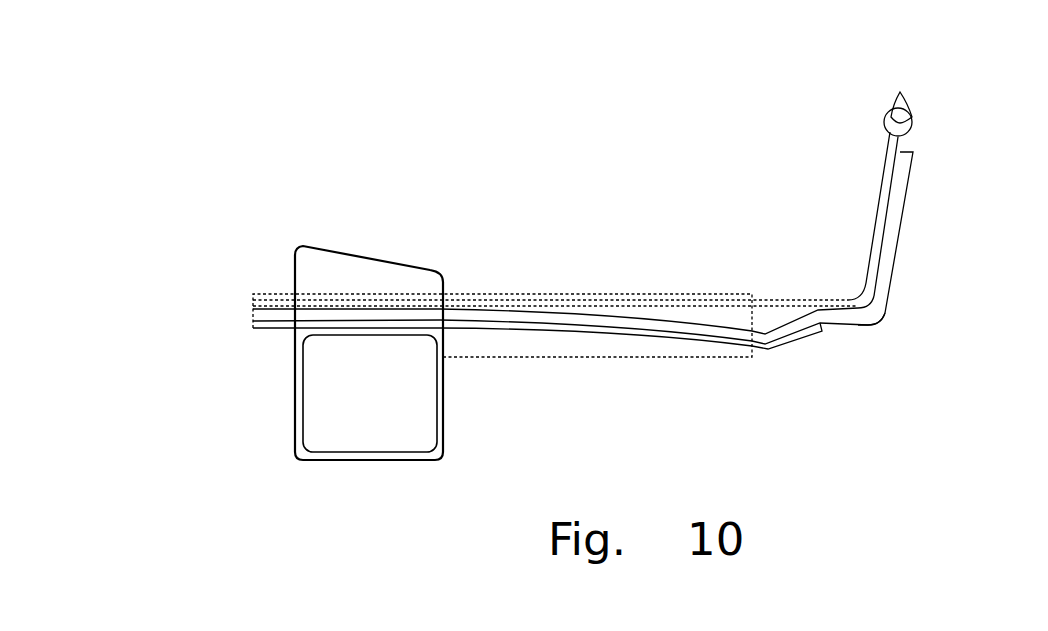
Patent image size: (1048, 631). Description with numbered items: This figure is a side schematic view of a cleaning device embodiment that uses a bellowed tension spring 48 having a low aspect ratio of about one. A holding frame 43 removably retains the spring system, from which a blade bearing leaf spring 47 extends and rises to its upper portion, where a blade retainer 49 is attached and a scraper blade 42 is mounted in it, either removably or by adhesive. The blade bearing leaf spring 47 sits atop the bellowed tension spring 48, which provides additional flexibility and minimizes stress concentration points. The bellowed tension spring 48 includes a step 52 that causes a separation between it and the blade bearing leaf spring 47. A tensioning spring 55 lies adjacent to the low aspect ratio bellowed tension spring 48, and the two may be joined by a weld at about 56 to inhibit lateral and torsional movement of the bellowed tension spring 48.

The scraper blade 42 is at (885, 92).
The holding frame 43 is at (282, 435).
The blade bearing leaf spring 47 is at (868, 180).
The bellowed tension spring 48 is at (860, 338).
The blade retainer 49 is at (927, 122).
The step 52 is at (780, 312).
The tensioning spring 55 is at (602, 343).
The weld 56 is at (769, 351).